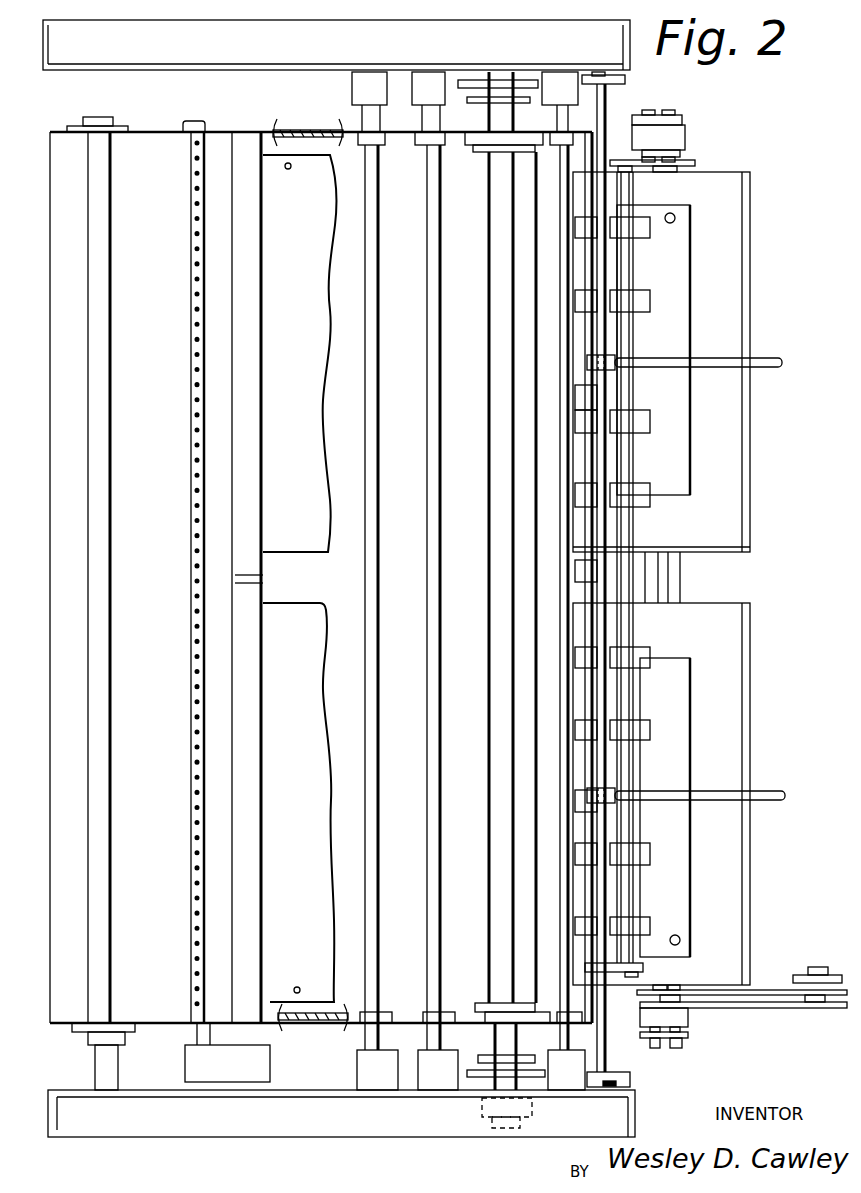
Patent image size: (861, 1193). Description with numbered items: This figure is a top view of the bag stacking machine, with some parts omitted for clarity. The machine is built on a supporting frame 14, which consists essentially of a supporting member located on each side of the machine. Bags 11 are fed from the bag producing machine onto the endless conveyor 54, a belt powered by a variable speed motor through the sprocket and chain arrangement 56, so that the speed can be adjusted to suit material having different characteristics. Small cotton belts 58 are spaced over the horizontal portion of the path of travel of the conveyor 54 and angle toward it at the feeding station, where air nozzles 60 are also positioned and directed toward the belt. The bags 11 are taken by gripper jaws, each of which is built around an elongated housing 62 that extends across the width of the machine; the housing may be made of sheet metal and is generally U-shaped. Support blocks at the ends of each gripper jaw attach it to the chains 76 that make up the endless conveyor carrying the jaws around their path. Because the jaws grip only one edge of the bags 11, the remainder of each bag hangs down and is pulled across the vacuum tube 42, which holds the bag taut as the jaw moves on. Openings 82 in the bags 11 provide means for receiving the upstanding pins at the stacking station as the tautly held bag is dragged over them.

The bags 11 is at (302, 342).
The supporting frame 14 is at (477, 33).
The vacuum tube 42 is at (190, 343).
The endless conveyor 54 is at (727, 508).
The sprocket and chain arrangement 56 is at (770, 984).
The cotton belts 58 is at (642, 422).
The air nozzles 60 is at (762, 358).
The elongated housing 62 is at (250, 437).
The chains 76 is at (315, 130).
The openings 82 is at (640, 212).